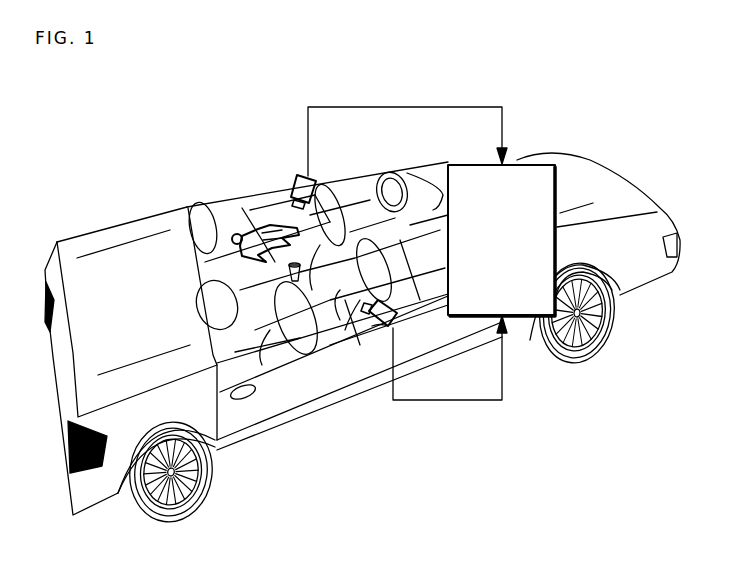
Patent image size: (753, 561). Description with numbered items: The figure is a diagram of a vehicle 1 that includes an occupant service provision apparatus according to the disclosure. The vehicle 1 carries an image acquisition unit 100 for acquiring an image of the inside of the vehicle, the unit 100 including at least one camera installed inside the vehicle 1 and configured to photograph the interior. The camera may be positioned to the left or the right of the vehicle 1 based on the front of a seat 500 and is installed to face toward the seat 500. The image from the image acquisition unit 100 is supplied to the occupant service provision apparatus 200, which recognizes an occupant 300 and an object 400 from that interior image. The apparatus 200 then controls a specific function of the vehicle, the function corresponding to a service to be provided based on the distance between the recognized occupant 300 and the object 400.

The vehicle 1 is at (150, 215).
The image acquisition unit 100 is at (295, 178).
The occupant service provision apparatus 200 is at (519, 165).
The occupant 300 is at (237, 233).
The object 400 is at (278, 322).
The seat 500 is at (244, 327).